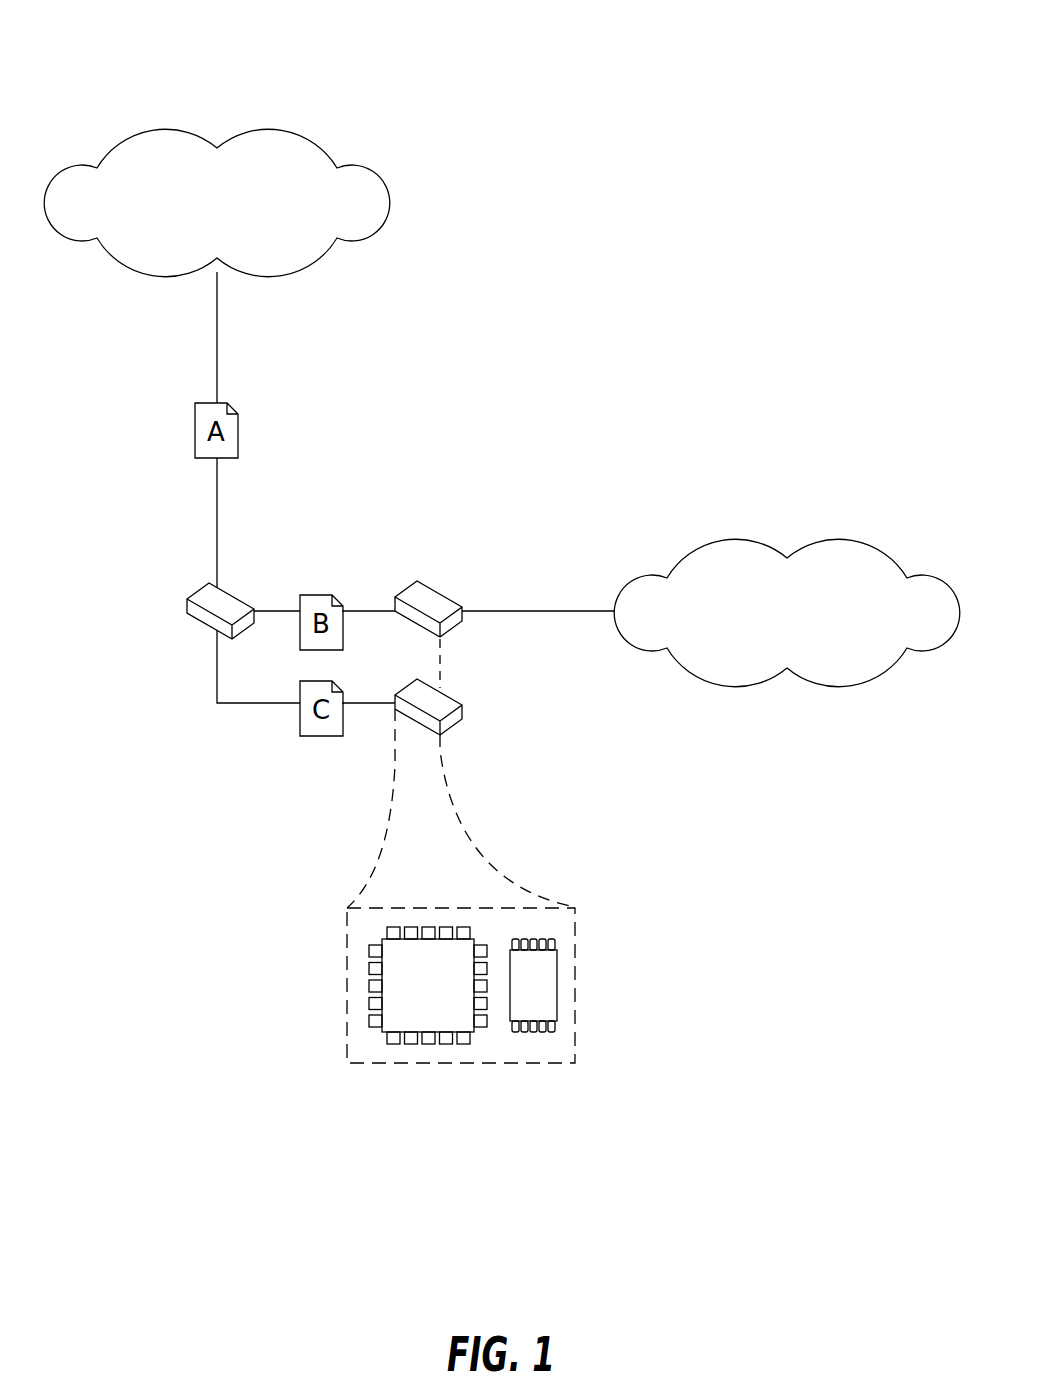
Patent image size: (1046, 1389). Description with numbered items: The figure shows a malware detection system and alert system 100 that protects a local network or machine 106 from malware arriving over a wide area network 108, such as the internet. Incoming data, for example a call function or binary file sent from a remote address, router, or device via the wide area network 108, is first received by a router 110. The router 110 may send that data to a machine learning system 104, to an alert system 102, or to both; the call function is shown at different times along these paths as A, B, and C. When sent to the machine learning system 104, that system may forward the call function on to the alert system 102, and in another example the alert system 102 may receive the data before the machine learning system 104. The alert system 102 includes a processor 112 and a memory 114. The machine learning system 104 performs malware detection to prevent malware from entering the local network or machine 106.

The malware detection system and alert system 100 is at (822, 33).
The alert system 102 is at (456, 702).
The machine learning system 104 is at (433, 583).
The local network or machine 106 is at (837, 543).
The wide area network (WAN) 108 is at (267, 133).
The router 110 is at (187, 598).
The processor 112 is at (369, 950).
The memory 114 is at (557, 983).